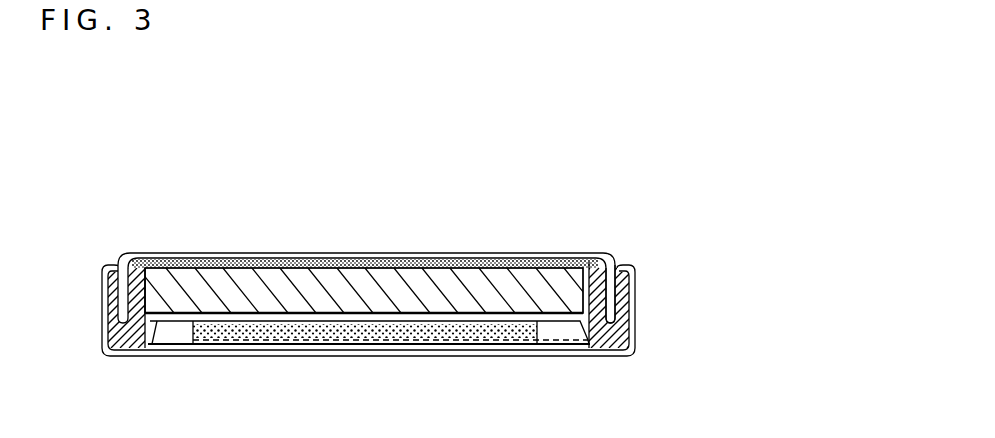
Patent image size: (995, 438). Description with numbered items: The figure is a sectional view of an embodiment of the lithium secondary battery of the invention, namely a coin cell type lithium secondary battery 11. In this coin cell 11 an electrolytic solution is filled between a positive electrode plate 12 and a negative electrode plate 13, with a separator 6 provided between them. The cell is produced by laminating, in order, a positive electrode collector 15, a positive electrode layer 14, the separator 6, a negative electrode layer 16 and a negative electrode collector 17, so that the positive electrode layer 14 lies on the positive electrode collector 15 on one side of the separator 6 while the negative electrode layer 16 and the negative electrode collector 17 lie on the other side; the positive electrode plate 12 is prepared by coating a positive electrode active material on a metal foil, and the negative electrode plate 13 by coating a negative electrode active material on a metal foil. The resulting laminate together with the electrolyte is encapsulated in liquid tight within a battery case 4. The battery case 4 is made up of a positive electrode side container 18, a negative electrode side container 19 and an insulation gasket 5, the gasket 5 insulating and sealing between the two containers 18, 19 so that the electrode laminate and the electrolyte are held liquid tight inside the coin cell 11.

The lithium secondary battery (coin cell) 11 is at (705, 132).
The battery case 4 is at (639, 255).
The positive electrode plate 12 is at (541, 330).
The negative electrode side container 19 is at (237, 253).
The insulation gasket 5 is at (597, 263).
The negative electrode collector 17 is at (391, 264).
The negative electrode layer 16 is at (488, 280).
The negative electrode plate 13 is at (183, 286).
The separator 6 is at (516, 321).
The positive electrode side container 18 is at (182, 347).
The positive electrode layer 14 is at (303, 340).
The positive electrode collector 15 is at (386, 343).